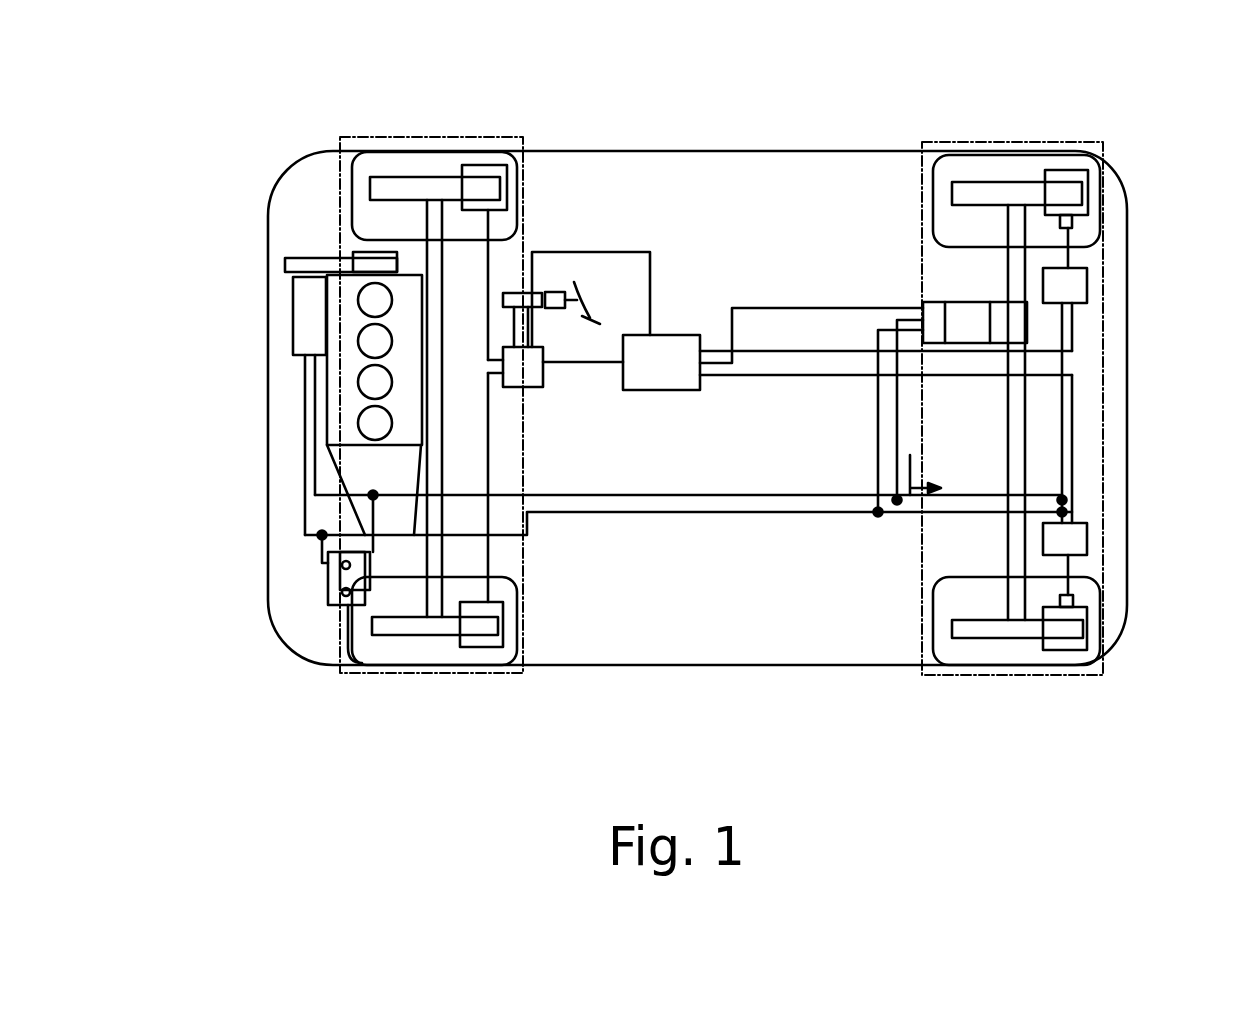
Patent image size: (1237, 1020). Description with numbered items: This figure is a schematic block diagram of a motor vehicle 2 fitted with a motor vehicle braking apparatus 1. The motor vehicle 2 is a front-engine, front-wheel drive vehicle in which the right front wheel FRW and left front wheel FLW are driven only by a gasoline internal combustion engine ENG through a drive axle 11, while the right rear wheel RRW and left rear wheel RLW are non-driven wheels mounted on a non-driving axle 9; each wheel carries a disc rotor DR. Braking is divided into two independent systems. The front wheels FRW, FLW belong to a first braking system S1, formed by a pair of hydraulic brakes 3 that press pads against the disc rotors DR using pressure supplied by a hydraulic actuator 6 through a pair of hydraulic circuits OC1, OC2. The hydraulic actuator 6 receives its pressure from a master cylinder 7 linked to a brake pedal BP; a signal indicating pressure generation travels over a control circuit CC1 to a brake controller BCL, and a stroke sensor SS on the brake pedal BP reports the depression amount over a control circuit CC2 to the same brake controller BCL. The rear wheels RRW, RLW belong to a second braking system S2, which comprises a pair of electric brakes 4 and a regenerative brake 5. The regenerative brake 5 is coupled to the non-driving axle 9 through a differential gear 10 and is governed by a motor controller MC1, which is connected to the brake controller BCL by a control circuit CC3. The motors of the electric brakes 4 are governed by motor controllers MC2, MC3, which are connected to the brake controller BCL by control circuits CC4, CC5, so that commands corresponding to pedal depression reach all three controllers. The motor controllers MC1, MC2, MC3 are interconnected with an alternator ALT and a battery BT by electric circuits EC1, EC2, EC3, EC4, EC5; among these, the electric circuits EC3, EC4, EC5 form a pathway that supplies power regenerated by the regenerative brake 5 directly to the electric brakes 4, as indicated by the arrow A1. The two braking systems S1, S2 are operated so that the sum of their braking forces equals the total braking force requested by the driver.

The motor vehicle braking apparatus 1 is at (669, 172).
The motor vehicle 2 is at (723, 666).
The hydraulic brakes 3 is at (486, 165).
The electric brakes 4 is at (1075, 172).
The regenerative brake 5 is at (955, 302).
The hydraulic actuator 6 is at (531, 387).
The master cylinder 7 is at (530, 296).
The non-driving axle 9 is at (1006, 482).
The differential gear 10 is at (1000, 302).
The drive axle 11 is at (442, 288).
The right front wheel FRW is at (345, 172).
The left front wheel FLW is at (380, 655).
The right rear wheel RRW is at (1010, 168).
The left rear wheel RLW is at (1025, 660).
The disc rotor DR is at (380, 190).
The first braking system S1 is at (458, 673).
The second braking system S2 is at (943, 675).
The alternator ALT is at (302, 312).
The gasoline internal combustion engine ENG is at (355, 392).
The battery BT is at (326, 580).
The electric circuit EC1 is at (315, 462).
The electric circuit EC2 is at (693, 495).
The electric circuit EC3 is at (877, 437).
The electric circuit EC4 is at (958, 512).
The electric circuit EC5 is at (1068, 440).
The hydraulic circuit OC1 is at (493, 267).
The hydraulic circuit OC2 is at (490, 547).
The control circuit CC1 is at (580, 362).
The control circuit CC2 is at (632, 252).
The control circuit CC3 is at (838, 307).
The control circuit CC4 is at (782, 350).
The control circuit CC5 is at (778, 375).
The brake pedal BP is at (590, 310).
The stroke sensor SS is at (556, 310).
The brake controller BCL is at (658, 390).
The motor controller MC1 is at (937, 345).
The motor controller MC2 is at (1083, 287).
The motor controller MC3 is at (1075, 540).
The arrow A1 is at (912, 497).